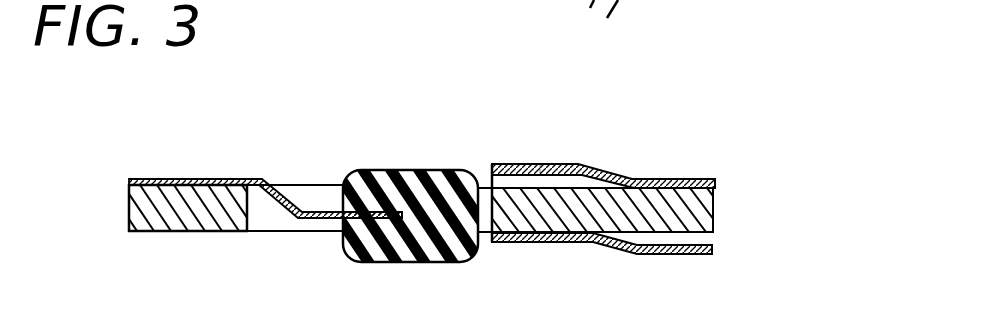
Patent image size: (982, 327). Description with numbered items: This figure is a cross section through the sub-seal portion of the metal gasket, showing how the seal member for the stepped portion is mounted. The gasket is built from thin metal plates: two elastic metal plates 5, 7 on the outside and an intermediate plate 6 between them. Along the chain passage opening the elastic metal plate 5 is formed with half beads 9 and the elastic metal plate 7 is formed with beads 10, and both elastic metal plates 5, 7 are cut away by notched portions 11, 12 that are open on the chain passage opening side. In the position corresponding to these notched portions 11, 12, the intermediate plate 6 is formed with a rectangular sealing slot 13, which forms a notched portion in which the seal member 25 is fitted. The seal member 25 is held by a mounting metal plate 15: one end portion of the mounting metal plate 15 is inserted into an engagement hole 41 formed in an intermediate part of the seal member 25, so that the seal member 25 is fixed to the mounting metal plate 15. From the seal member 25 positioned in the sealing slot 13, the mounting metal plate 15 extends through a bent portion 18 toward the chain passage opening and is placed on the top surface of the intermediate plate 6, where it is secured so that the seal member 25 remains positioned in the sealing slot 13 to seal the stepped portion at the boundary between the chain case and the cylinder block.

The elastic metal plate 5 is at (686, 179).
The intermediate plate 6 is at (182, 215).
The elastic metal plate 7 is at (607, 248).
The half beads 9 is at (588, 164).
The beads 10 is at (673, 255).
The notched portion 11 is at (493, 169).
The notched portion 12 is at (490, 243).
The rectangular sealing slot 13 is at (250, 217).
The mounting metal plate 15 is at (198, 178).
The bent portion 18 is at (293, 220).
The seal member 25 is at (418, 197).
The engagement hole 41 is at (383, 200).